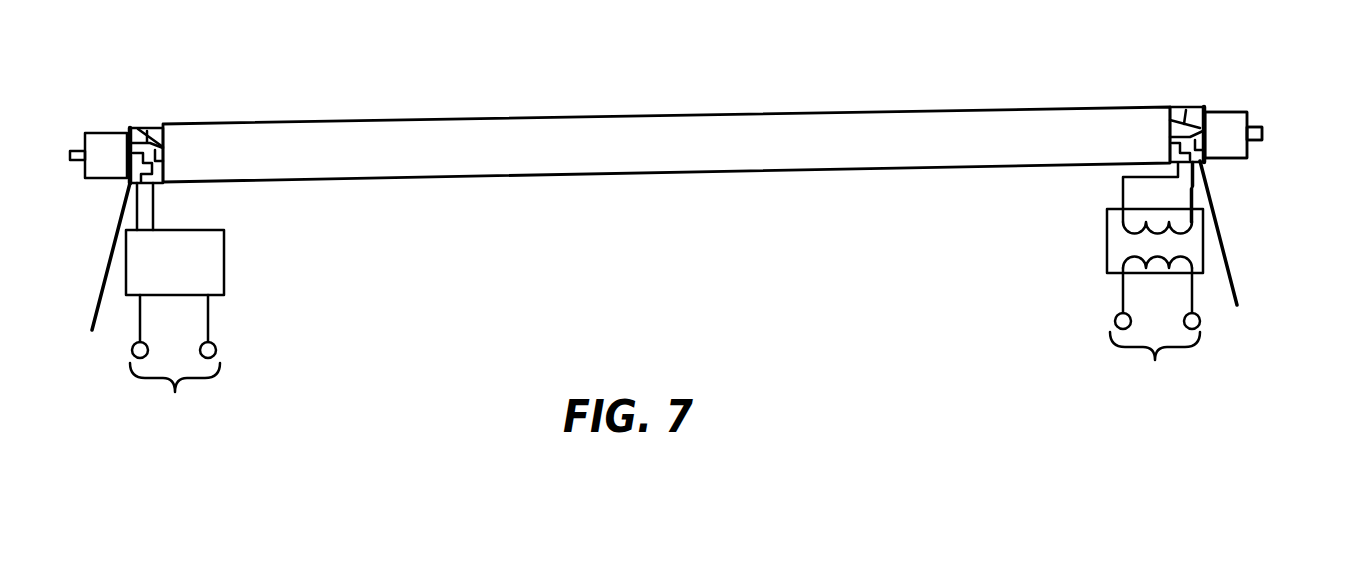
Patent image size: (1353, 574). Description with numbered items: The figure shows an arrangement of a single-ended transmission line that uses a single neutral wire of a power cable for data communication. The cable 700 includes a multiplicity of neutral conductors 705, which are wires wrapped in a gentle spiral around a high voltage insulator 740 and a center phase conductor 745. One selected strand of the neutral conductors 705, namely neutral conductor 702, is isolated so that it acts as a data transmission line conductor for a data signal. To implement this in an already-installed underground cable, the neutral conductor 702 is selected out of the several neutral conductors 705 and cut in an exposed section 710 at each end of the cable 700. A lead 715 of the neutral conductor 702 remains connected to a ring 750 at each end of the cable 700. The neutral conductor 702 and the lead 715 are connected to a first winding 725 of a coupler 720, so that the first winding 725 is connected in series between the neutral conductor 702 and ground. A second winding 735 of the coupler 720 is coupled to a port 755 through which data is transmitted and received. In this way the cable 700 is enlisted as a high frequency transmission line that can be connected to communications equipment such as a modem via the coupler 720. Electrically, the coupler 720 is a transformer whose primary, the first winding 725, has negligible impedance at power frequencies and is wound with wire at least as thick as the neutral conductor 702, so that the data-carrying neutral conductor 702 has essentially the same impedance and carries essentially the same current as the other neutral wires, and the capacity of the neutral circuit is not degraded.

The cable 700 is at (400, 122).
The neutral conductor 702 is at (163, 128).
The neutral conductors 705 is at (137, 128).
The exposed section 710 is at (152, 128).
The lead 715 is at (130, 207).
The coupler 720 is at (224, 241).
The first winding 725 is at (1155, 226).
The second winding 735 is at (1157, 268).
The high voltage insulator 740 is at (1241, 106).
The center phase conductor 745 is at (1263, 135).
The ring 750 is at (127, 150).
The port 755 is at (665, 363).